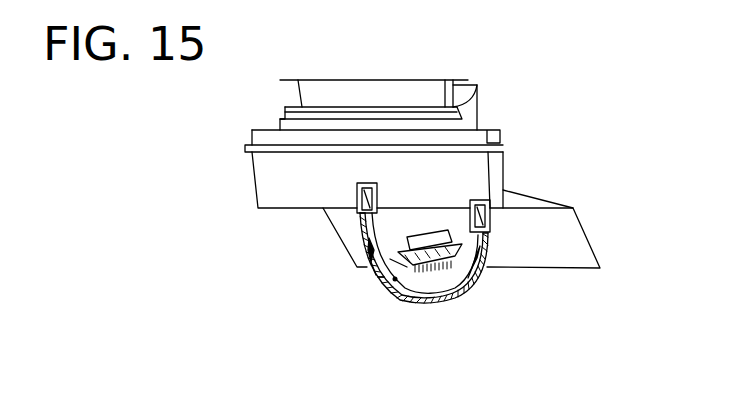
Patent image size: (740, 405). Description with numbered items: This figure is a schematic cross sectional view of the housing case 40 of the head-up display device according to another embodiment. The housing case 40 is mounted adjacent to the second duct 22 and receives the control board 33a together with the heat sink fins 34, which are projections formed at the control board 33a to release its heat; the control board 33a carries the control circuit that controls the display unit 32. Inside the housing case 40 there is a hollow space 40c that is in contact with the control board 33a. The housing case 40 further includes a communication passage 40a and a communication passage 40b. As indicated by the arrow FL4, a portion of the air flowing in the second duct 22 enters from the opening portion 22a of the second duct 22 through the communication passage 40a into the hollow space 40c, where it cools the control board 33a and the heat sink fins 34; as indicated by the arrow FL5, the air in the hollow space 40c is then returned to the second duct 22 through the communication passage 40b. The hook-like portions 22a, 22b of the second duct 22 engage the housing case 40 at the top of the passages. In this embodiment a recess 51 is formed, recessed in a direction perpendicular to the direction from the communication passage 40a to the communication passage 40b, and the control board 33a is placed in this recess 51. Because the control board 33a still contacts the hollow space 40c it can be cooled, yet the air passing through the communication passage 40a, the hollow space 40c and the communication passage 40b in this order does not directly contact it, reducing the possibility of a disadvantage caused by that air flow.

The second duct 22 is at (580, 218).
The opening portion 22a is at (490, 218).
The hook portion 22b is at (380, 203).
The display unit 32 is at (375, 272).
The control board 33a is at (423, 267).
The heat sink fins 34 is at (443, 267).
The housing case 40 is at (475, 290).
The communication passage 40a is at (488, 237).
The communication passage 40b is at (358, 220).
The hollow space 40c is at (380, 290).
The recess 51 is at (418, 270).
The arrow indicating air flow FL4 is at (488, 253).
The arrow indicating air flow FL5 is at (367, 250).